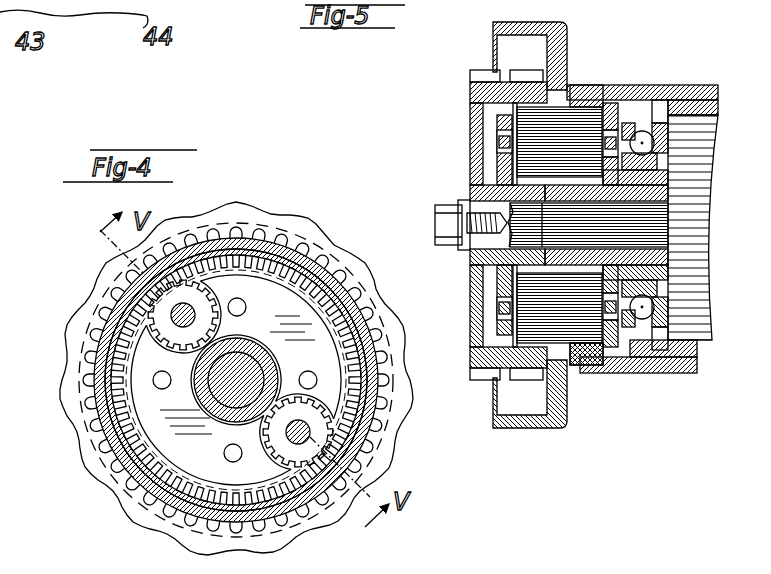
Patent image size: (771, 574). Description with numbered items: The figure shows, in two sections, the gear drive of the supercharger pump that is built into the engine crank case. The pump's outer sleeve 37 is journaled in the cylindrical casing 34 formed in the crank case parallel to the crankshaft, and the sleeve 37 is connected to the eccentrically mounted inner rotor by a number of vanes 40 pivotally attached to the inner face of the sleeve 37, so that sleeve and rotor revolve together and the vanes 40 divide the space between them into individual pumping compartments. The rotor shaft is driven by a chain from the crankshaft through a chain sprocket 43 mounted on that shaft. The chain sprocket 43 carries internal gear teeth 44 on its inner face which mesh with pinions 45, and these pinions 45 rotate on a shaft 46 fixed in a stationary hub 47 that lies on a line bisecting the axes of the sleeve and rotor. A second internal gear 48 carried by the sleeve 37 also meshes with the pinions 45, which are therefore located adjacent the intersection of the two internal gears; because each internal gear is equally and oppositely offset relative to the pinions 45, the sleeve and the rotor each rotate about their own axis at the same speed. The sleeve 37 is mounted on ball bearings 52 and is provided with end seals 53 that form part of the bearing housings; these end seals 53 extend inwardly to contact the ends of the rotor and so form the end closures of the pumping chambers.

In FIG. 5, the cylindrical casing 34 is at (670, 365).
In FIG. 5, the outer sleeve 37 is at (697, 355).
In FIG. 4, the vanes 40 is at (236, 380).
In FIG. 5, the vanes 40 is at (697, 223).
In FIG. 4, the chain sprocket 43 is at (366, 318).
In FIG. 5, the chain sprocket 43 is at (470, 77).
In FIG. 4, the internal gear teeth 44 is at (358, 343).
In FIG. 5, the internal gear teeth 44 is at (517, 107).
In FIG. 4, the pinions 45 is at (97, 285).
In FIG. 5, the pinions 45 is at (580, 110).
In FIG. 4, the shaft 46 is at (298, 430).
In FIG. 5, the shaft 46 is at (498, 140).
In FIG. 4, the stationary hub 47 is at (157, 405).
In FIG. 5, the stationary hub 47 is at (637, 277).
In FIG. 4, the second internal gear 48 is at (145, 507).
In FIG. 5, the second internal gear 48 is at (600, 347).
In FIG. 5, the ball bearings 52 is at (644, 140).
In FIG. 5, the end seals 53 is at (668, 168).